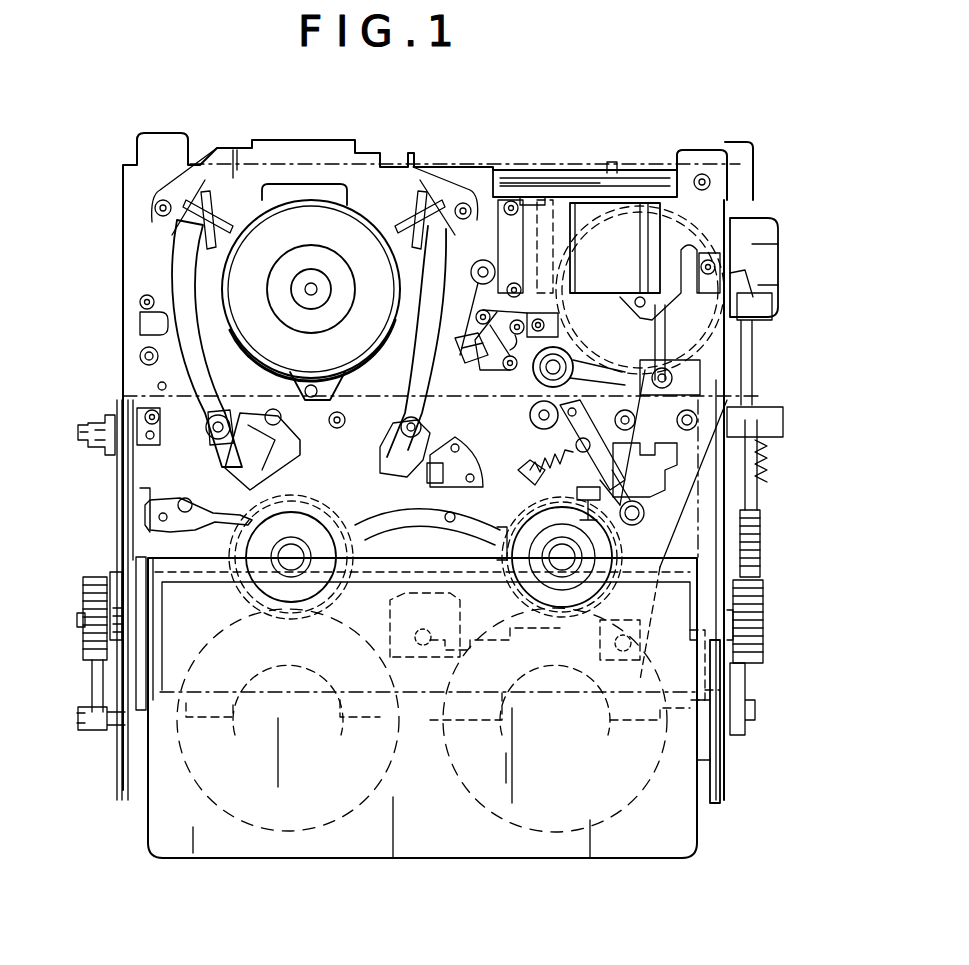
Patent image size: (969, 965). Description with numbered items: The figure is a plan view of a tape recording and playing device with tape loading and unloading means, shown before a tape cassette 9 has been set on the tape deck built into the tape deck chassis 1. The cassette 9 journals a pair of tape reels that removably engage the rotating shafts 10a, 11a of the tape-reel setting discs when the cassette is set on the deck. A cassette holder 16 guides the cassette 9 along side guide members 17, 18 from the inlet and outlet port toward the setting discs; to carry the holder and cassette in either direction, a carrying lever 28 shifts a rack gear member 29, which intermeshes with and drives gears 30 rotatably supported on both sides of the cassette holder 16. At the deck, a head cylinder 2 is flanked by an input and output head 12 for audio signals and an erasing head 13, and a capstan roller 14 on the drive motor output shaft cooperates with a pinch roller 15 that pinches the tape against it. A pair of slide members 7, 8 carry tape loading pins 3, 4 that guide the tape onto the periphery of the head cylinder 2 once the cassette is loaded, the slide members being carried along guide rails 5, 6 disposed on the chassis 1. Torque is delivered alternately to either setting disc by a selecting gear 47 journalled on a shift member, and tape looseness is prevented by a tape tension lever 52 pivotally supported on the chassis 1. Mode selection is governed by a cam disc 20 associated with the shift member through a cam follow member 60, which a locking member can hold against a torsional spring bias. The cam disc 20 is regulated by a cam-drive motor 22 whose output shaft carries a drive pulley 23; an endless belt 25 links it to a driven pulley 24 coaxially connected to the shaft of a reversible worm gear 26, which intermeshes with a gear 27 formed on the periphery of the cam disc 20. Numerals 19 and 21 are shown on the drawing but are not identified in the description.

The tape deck chassis 1 is at (128, 196).
The head cylinder 2 is at (290, 228).
The tape loading pin 3 is at (212, 420).
The tape loading pin 4 is at (432, 470).
The guide rail 5 is at (172, 268).
The guide rail 6 is at (430, 349).
The slide member 7 is at (222, 470).
The slide member 8 is at (392, 462).
The tape cassette 9 is at (407, 858).
The rotating shaft 10a is at (275, 553).
The rotating shaft 11a is at (578, 560).
The input and output head 12 is at (545, 372).
The erasing head 13 is at (142, 323).
The capstan roller 14 is at (543, 418).
The pinch roller 15 is at (545, 386).
The cassette holder 16 is at (120, 558).
The side guide member 17 is at (128, 732).
The side guide member 18 is at (722, 787).
The head assembly 19 is at (668, 160).
The cam disc 20 is at (698, 310).
The tab 21 is at (715, 210).
The cam-drive motor 22 is at (690, 220).
The drive pulley 23 is at (613, 165).
The driven pulley 24 is at (537, 172).
The endless belt 25 is at (580, 183).
The reversible worm gear 26 is at (520, 235).
The gear 27 is at (698, 337).
The carrying lever 28 is at (762, 265).
The rack gear member 29 is at (760, 550).
The gears 30 is at (88, 612).
The selecting gear 47 is at (335, 582).
The tape tension lever 52 is at (302, 428).
The cam follow member 60 is at (662, 508).